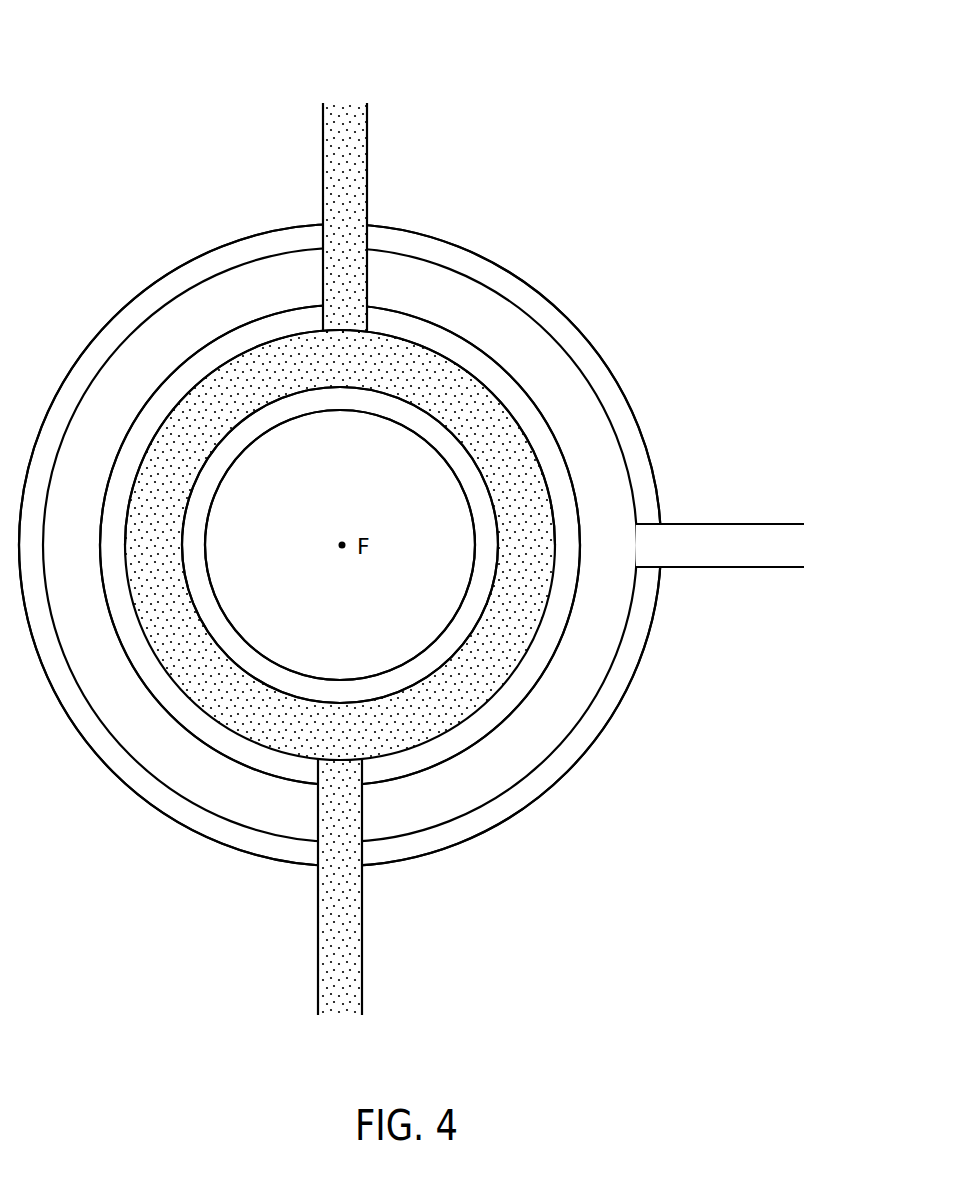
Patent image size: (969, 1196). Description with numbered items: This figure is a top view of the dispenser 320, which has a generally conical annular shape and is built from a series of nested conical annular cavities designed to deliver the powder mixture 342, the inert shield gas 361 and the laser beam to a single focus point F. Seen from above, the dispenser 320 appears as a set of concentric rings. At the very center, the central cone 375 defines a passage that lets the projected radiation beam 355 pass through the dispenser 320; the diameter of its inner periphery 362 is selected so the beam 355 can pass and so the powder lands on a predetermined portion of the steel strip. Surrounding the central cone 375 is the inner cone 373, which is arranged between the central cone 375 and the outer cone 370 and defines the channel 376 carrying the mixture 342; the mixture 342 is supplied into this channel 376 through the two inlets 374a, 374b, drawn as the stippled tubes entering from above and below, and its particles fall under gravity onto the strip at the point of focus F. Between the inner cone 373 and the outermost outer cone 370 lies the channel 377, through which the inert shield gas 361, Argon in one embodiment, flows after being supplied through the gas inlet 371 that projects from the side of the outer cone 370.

The dispenser 320 is at (630, 243).
The mixture 342 is at (344, 97).
The radiation beam 355 is at (358, 473).
The inert shield gas 361 is at (572, 385).
The periphery of the central cone 362 is at (397, 668).
The outer cone 370 is at (628, 688).
The gas inlet 371 is at (773, 522).
The inner cone 373 is at (432, 767).
The inlet 374a is at (318, 940).
The inlet 374b is at (367, 163).
The central cone 375 is at (260, 667).
The channel 376 is at (380, 352).
The channel 377 is at (487, 287).